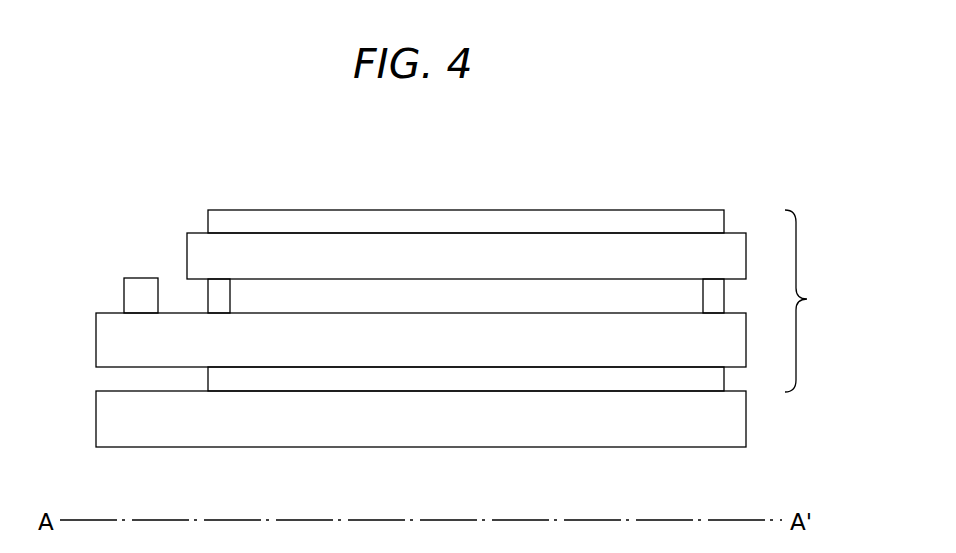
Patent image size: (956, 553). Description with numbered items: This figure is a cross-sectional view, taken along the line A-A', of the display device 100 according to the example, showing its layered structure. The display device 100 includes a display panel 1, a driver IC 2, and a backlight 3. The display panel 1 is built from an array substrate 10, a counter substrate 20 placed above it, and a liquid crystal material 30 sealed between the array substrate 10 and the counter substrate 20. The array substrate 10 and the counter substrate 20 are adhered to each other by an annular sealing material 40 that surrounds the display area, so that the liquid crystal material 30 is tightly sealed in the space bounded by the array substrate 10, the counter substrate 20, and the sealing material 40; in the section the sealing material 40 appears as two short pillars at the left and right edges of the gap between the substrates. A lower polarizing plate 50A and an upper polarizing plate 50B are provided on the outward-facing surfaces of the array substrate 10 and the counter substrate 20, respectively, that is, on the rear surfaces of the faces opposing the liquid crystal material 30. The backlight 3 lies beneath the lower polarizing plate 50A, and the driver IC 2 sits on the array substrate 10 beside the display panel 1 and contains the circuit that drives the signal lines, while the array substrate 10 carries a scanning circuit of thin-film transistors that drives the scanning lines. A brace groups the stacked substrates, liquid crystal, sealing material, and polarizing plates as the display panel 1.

The display device 100 is at (443, 155).
The display panel 1 is at (806, 301).
The driver IC 2 is at (133, 291).
The backlight 3 is at (521, 428).
The array substrate 10 is at (640, 350).
The counter substrate 20 is at (621, 252).
The liquid crystal material 30 is at (510, 293).
The sealing material 40 is at (217, 294).
The lower polarizing plate 50A is at (313, 380).
The upper polarizing plate 50B is at (308, 222).